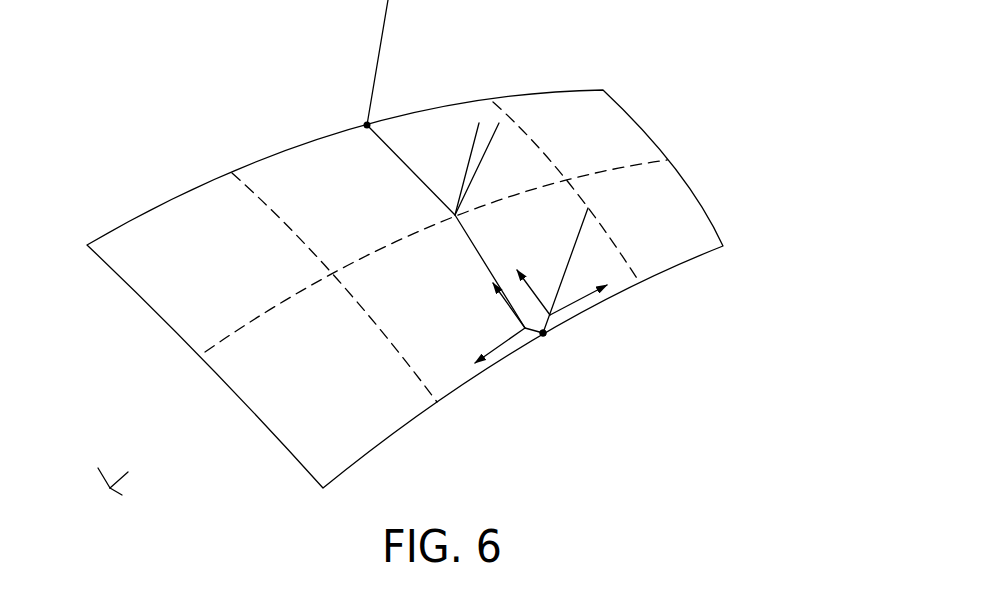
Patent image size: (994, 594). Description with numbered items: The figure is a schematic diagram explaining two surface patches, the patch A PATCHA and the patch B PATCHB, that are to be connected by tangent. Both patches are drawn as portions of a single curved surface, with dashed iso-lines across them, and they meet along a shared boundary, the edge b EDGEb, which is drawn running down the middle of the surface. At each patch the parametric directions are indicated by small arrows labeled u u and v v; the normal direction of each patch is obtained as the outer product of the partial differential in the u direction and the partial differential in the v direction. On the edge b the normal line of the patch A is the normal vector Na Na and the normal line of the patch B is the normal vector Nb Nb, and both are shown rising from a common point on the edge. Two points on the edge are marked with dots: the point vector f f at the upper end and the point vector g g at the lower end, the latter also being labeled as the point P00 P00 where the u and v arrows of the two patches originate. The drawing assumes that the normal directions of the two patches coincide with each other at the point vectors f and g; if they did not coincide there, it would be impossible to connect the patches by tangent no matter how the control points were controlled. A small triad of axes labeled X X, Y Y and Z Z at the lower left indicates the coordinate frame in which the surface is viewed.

The edge b EDGEb is at (413, 172).
The point vector f is at (367, 125).
The point vector g is at (543, 337).
The normal vector Na is at (472, 140).
The normal vector Nb is at (492, 146).
The control point P00 is at (547, 335).
The patch A PATCHA is at (198, 347).
The patch B PATCHB is at (677, 170).
The u direction u is at (508, 285).
The v direction v is at (530, 312).
The X axis X is at (125, 500).
The Y axis Y is at (128, 471).
The Z axis Z is at (94, 466).